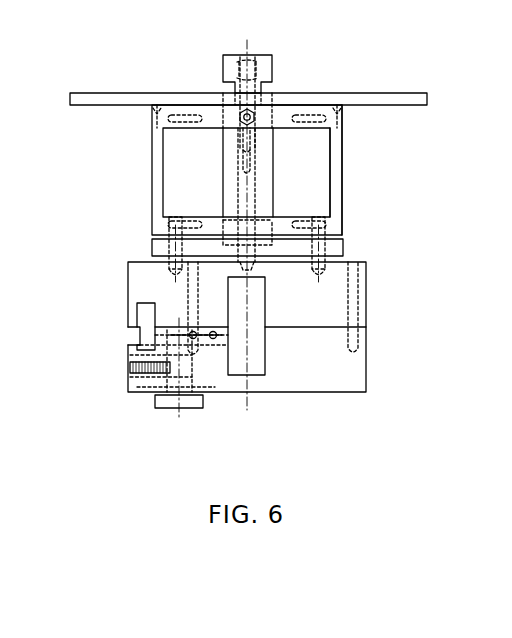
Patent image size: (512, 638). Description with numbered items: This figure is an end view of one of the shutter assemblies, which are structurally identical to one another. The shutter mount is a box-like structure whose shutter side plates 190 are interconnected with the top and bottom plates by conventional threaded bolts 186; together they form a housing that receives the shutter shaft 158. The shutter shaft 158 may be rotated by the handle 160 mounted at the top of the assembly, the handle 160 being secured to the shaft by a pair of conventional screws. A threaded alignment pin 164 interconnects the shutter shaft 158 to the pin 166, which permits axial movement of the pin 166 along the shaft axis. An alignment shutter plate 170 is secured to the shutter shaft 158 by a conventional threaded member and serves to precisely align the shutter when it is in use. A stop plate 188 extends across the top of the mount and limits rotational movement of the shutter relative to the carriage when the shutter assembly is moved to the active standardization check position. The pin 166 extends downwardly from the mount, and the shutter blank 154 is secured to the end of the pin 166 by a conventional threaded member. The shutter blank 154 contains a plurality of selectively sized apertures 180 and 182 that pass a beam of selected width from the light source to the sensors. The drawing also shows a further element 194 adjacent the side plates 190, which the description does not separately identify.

The shutter blank 154 is at (280, 340).
The shutter shaft 158 is at (322, 185).
The handle 160 is at (278, 76).
The threaded alignment pin 164 is at (205, 95).
The pin 166 is at (245, 185).
The alignment shutter plate 170 is at (204, 249).
The aperture 180 is at (285, 349).
The aperture 182 is at (102, 314).
The threaded bolts 186 is at (155, 115).
The stop plate 188 is at (252, 81).
The shutter side plates 190 is at (150, 203).
The right frame post 194 is at (375, 170).